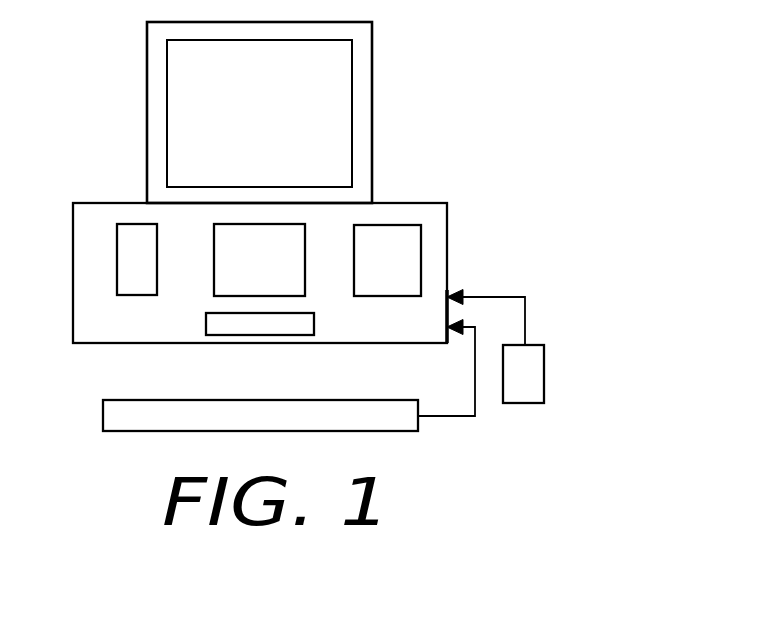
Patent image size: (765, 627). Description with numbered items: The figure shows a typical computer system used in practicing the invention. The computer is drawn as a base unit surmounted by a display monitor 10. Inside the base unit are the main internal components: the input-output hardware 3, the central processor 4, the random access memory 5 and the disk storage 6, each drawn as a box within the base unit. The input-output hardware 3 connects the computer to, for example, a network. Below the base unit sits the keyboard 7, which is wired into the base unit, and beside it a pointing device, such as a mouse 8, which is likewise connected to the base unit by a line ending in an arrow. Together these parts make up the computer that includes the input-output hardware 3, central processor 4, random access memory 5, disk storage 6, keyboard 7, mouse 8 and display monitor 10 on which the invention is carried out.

The input-output hardware 3 is at (137, 238).
The central processor 4 is at (293, 243).
The random access memory 5 is at (407, 255).
The disk storage 6 is at (297, 323).
The keyboard 7 is at (338, 382).
The mouse 8 is at (544, 388).
The display monitor 10 is at (372, 89).